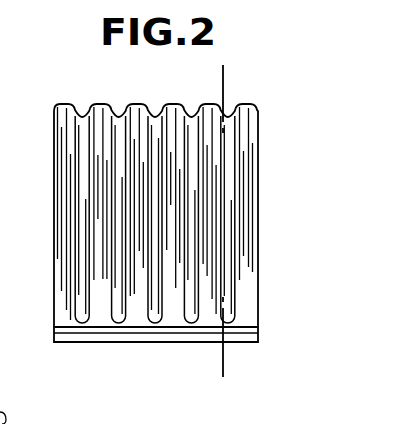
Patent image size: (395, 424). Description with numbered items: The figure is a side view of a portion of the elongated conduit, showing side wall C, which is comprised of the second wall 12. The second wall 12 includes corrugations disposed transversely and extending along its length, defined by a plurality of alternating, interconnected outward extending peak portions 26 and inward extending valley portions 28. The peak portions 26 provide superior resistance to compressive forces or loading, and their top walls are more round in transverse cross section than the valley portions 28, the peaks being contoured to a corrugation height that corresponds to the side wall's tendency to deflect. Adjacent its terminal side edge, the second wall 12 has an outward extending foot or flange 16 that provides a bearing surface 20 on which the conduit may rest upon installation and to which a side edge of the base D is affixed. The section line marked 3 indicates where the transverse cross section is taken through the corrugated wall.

The second wall 12 is at (88, 117).
The flange 16 is at (163, 331).
The bearing surface 20 is at (108, 342).
The peak portions 26 is at (103, 104).
The valley portions 28 is at (190, 290).
The side wall C is at (53, 216).
The base D is at (215, 342).
The section line 3- 3 is at (237, 59).